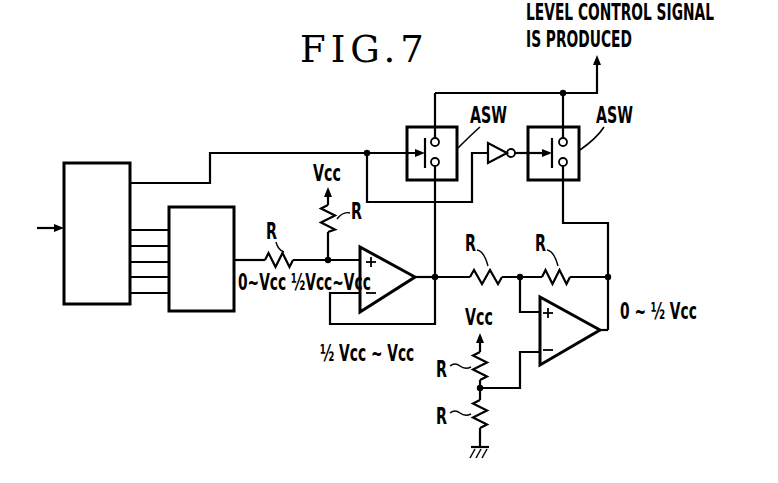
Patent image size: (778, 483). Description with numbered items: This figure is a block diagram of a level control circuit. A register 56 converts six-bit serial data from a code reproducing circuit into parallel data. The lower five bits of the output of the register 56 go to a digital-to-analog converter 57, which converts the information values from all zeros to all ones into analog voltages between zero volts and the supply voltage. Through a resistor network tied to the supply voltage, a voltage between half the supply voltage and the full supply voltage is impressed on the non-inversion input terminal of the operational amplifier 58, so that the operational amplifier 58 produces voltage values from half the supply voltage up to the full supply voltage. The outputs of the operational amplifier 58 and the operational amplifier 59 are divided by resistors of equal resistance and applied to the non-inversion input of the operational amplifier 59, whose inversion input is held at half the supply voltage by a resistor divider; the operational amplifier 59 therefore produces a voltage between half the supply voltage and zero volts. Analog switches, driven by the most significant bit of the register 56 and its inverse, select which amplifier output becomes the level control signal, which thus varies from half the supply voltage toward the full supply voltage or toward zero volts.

The register 56 is at (111, 163).
The digital-to-analog converter 57 is at (230, 207).
The operational amplifier 58 is at (389, 258).
The operational amplifier 59 is at (575, 350).